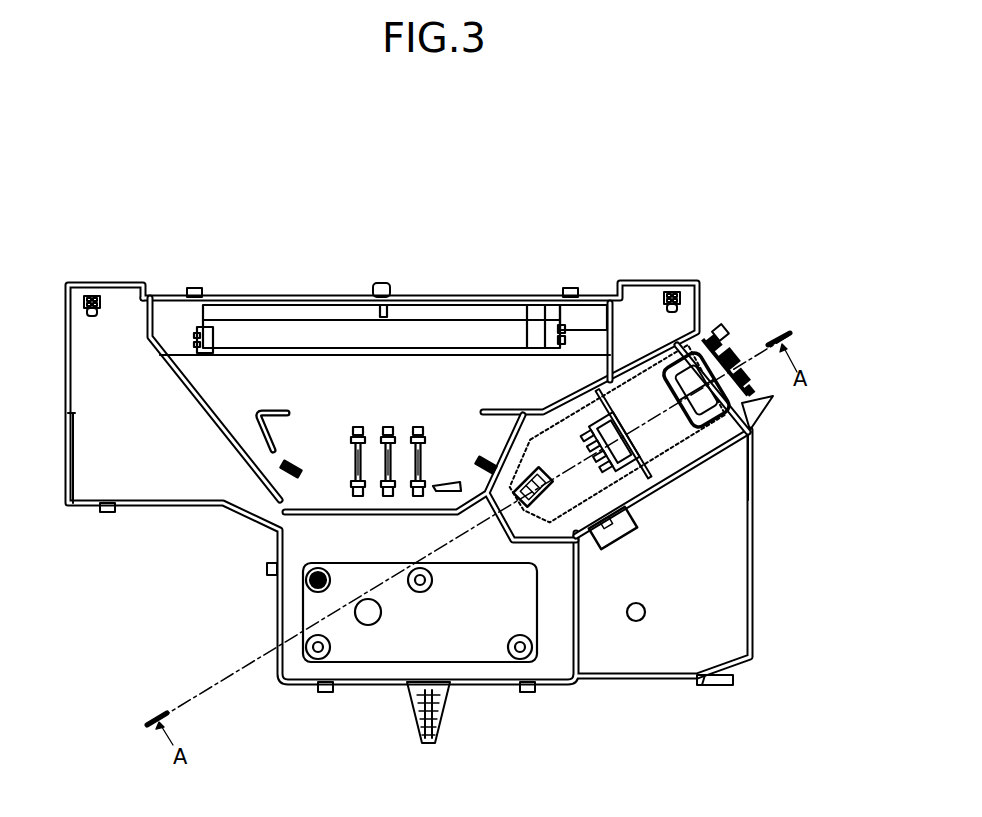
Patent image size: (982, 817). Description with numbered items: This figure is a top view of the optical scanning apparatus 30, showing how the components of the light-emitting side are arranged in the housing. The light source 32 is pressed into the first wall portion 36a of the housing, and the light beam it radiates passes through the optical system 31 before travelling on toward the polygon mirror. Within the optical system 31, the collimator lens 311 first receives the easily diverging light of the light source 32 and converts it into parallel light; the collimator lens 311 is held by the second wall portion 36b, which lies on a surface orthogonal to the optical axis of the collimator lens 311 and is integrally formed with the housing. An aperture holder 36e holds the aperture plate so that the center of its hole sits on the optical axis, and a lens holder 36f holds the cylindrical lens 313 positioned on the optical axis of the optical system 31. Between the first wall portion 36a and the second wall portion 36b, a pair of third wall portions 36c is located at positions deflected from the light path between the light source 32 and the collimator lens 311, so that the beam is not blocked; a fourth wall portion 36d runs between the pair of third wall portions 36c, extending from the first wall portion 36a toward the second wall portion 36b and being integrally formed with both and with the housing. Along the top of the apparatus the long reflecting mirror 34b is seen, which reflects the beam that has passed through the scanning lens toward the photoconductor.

The optical scanning apparatus 30 is at (176, 262).
The optical system 31 is at (544, 407).
The collimator lens 311 is at (672, 396).
The cylindrical lens 313 is at (546, 503).
The light source 32 is at (733, 358).
The reflecting mirror 34b is at (323, 332).
The first wall portion 36a is at (703, 358).
The second wall portion 36b is at (741, 472).
The third wall portions 36c is at (679, 352).
The fourth wall portion 36d is at (748, 428).
The aperture holder 36e is at (648, 460).
The lens holder 36f is at (538, 502).